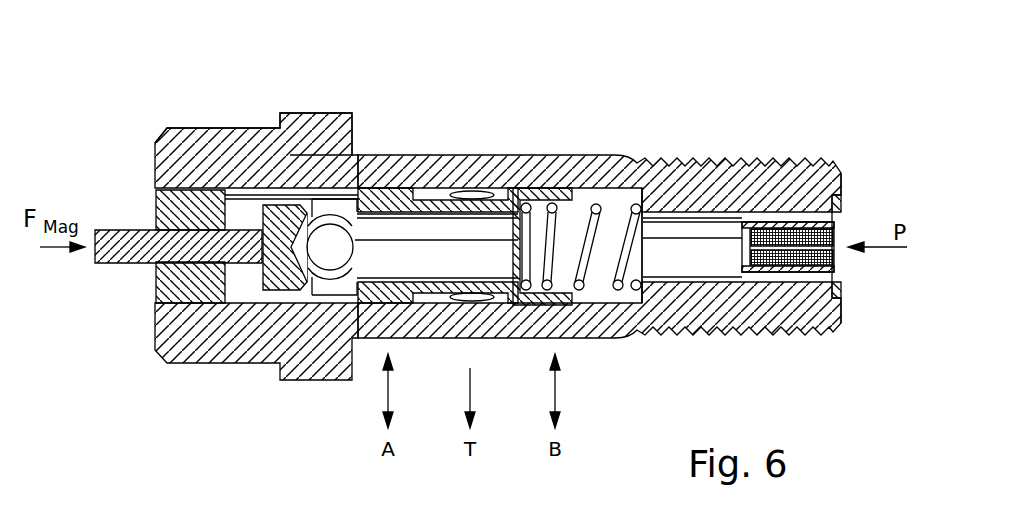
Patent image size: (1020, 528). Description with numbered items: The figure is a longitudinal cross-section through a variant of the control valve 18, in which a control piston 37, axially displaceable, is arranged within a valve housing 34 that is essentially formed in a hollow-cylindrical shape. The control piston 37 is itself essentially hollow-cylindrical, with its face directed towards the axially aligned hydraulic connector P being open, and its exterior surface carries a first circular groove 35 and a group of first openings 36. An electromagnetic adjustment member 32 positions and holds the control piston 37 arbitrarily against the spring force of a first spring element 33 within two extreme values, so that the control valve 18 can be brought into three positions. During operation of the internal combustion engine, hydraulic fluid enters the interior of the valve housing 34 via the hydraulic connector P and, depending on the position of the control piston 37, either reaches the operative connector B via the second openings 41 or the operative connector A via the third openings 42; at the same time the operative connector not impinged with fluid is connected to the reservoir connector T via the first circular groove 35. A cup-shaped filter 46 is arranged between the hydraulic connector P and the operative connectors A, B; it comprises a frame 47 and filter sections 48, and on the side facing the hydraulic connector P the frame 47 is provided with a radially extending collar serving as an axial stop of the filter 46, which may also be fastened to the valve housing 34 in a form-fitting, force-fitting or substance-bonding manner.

The control valve 18 is at (188, 108).
The electromagnetic adjustment member 32 is at (124, 236).
The first spring element 33 is at (642, 192).
The valve housing 34 is at (790, 176).
The first circular groove 35 is at (447, 196).
The first openings 36 is at (338, 283).
The control piston 37 is at (280, 215).
The second openings 41 is at (581, 204).
The third openings 42 is at (412, 193).
The filter 46 is at (850, 298).
The frame 47 is at (763, 273).
The filter sections 48 is at (834, 226).